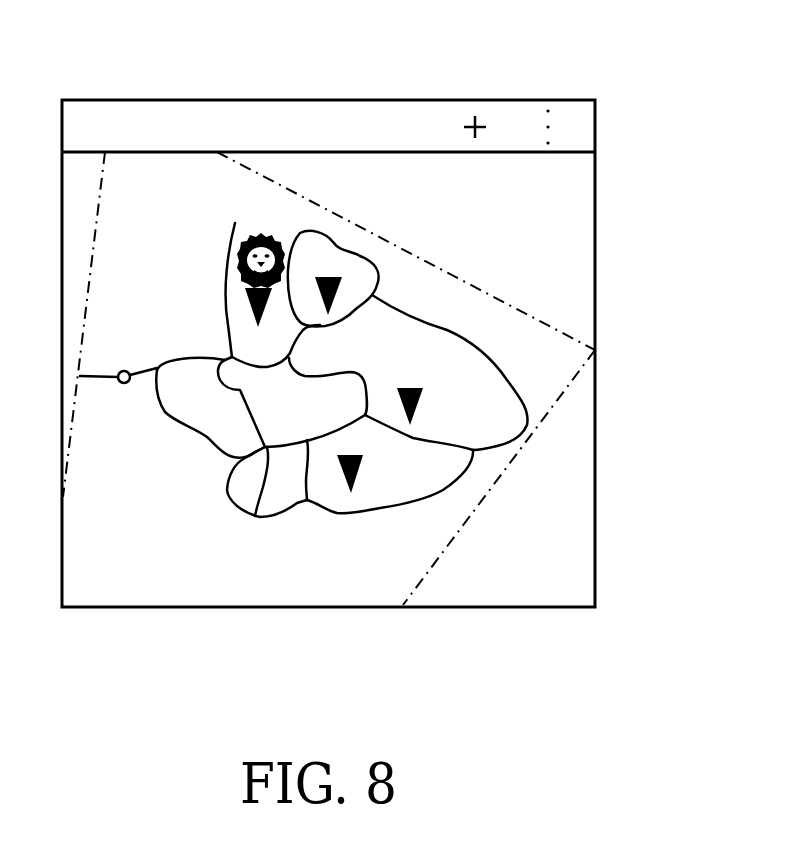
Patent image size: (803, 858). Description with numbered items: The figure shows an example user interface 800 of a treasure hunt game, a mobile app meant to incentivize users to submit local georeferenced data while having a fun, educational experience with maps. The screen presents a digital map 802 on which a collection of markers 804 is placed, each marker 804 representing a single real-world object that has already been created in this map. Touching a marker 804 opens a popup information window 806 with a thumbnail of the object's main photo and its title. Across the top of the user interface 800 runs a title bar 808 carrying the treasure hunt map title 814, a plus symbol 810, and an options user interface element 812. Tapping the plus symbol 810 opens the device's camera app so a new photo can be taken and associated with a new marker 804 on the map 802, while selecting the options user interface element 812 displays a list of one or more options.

The user interface 800 is at (85, 50).
The digital map 802 is at (609, 278).
The markers 804 is at (357, 292).
The popup information window 806 is at (255, 223).
The title bar 808 is at (599, 132).
The plus symbol 810 is at (499, 118).
The options user interface element 812 is at (555, 120).
The treasure hunt map title 814 is at (229, 124).